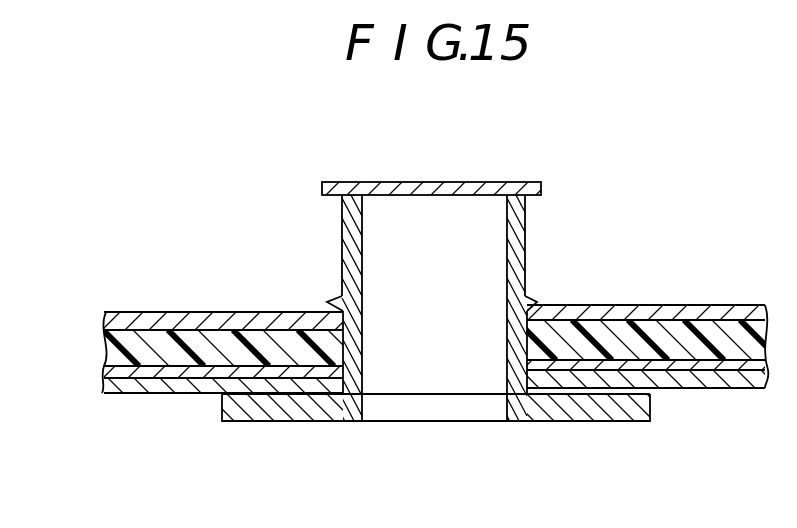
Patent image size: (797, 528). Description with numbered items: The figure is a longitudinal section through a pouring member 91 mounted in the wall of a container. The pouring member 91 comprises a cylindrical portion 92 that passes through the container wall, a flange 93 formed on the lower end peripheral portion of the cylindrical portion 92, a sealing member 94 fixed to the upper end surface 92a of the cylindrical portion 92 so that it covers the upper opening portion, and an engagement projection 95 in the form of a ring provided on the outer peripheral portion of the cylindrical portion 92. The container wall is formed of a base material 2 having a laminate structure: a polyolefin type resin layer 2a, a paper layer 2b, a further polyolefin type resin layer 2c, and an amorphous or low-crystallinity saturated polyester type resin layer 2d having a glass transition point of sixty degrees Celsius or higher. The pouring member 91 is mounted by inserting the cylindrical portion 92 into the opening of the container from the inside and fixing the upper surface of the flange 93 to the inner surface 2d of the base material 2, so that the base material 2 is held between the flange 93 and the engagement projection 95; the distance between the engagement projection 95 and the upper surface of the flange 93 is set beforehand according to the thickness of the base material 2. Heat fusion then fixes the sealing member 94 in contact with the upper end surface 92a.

The pouring member 91 is at (580, 166).
The cylindrical portion 92 is at (518, 232).
The upper end surface 92a is at (322, 192).
The flange 93 is at (275, 405).
The sealing member 94 is at (488, 182).
The engagement projection 95 is at (328, 299).
The base material 2 is at (676, 300).
The polyolefin type resin layer 2a is at (104, 322).
The paper layer 2b is at (562, 338).
The polyolefin type resin layer 2c is at (170, 383).
The saturated polyester type resin layer 2d is at (108, 378).